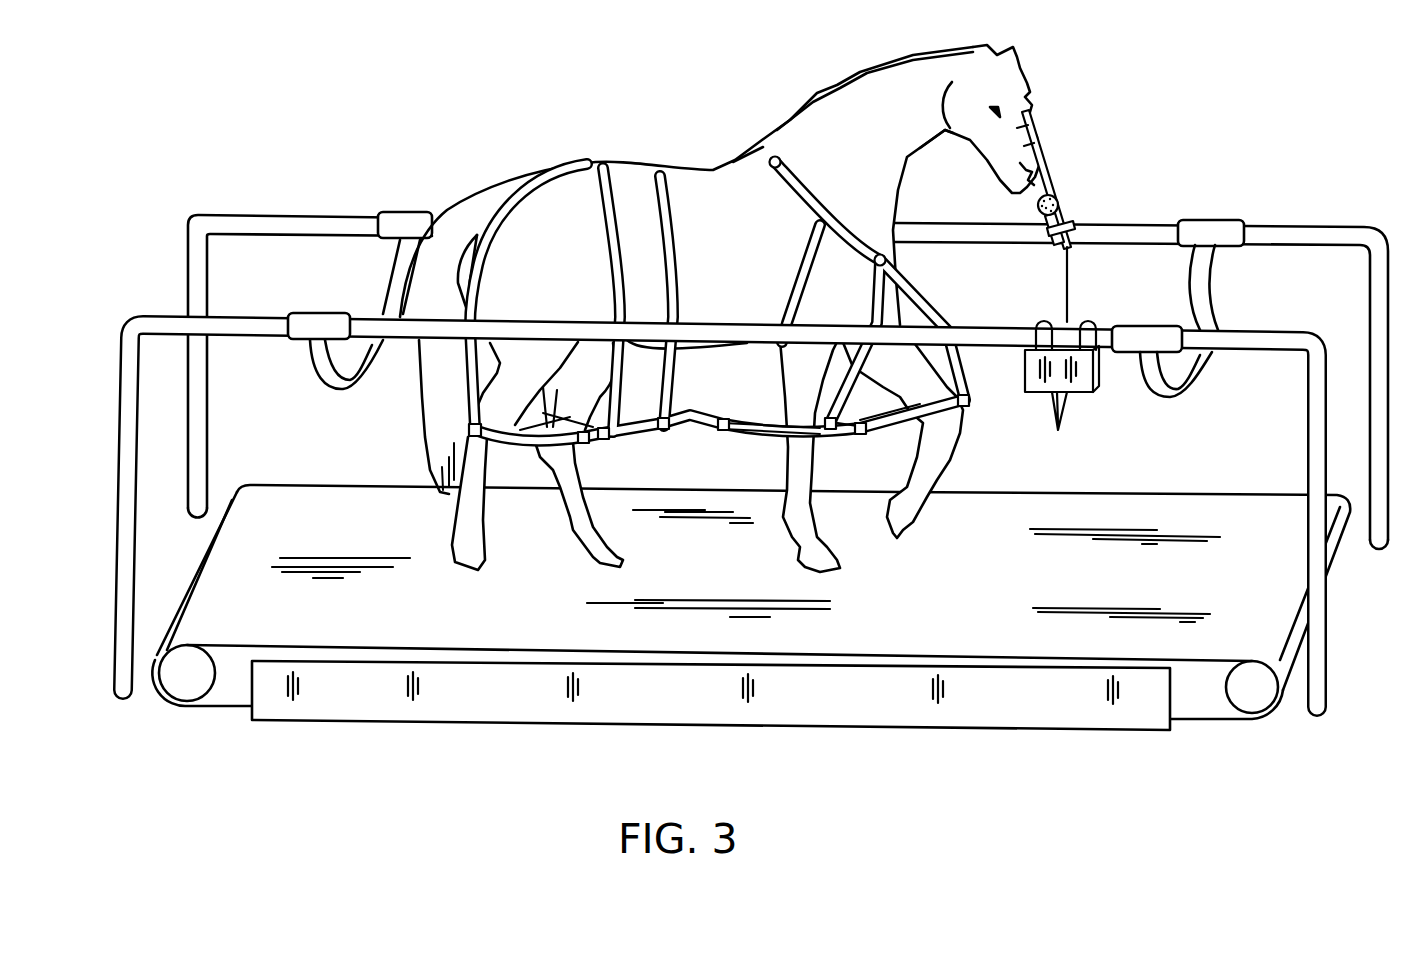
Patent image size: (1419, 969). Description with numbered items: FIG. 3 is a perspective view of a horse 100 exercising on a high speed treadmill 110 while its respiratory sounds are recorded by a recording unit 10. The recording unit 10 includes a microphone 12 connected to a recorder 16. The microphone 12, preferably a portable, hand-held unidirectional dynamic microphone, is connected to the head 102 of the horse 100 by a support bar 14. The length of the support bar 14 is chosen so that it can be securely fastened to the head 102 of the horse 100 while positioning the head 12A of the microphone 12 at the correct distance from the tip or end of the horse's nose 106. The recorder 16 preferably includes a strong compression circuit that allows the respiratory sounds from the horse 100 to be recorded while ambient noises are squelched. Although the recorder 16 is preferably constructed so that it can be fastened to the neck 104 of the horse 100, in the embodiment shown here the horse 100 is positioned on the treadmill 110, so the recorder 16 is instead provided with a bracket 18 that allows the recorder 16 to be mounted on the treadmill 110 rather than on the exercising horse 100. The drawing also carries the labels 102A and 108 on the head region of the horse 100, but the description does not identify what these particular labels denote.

The recording unit 10 is at (1058, 268).
The microphone 12 is at (1070, 243).
The head of the microphone 12A is at (1037, 217).
The support bar 14 is at (1040, 213).
The recorder 16 is at (1080, 387).
The bracket 18 is at (1087, 322).
The horse 100 is at (785, 296).
The head 102 is at (1057, 106).
The nostrils 102A is at (1023, 110).
The neck 104 is at (843, 118).
The nose 106 is at (1008, 177).
The halter strap 108 is at (1053, 160).
The treadmill 110 is at (1027, 717).